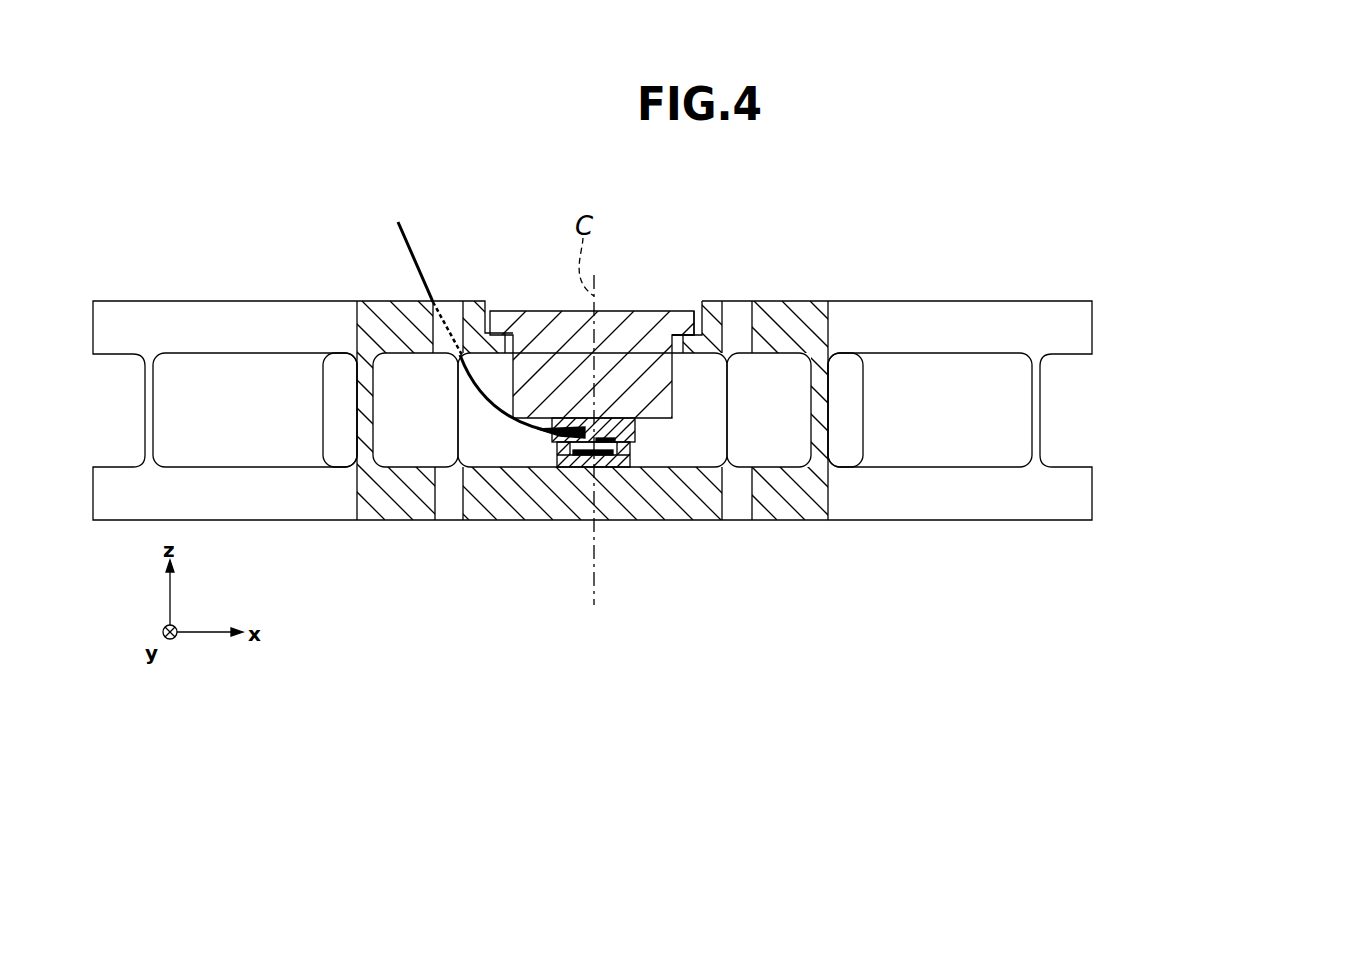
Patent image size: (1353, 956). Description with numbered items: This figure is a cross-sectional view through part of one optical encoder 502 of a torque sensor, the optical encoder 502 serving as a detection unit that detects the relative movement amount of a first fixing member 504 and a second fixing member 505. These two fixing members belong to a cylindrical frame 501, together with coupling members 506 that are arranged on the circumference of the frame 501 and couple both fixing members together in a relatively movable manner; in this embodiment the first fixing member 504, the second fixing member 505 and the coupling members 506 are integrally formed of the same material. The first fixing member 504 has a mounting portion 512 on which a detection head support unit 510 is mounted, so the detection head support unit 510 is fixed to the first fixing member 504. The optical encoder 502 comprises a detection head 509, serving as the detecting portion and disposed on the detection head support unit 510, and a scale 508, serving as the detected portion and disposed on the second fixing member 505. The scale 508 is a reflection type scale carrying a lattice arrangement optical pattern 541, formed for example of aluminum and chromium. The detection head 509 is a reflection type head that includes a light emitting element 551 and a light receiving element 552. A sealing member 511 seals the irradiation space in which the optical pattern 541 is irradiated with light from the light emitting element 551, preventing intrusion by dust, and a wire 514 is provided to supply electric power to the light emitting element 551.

The frame 501 is at (704, 410).
The first fixing member 504 is at (1108, 318).
The second fixing member 505 is at (1108, 497).
The coupling member 506 is at (1066, 420).
The optical encoder 502 is at (620, 289).
The detection head support unit 510 is at (538, 323).
The mounting portion 512 is at (691, 303).
The wire 514 is at (404, 235).
The light emitting element 551 is at (552, 424).
The light receiving element 552 is at (625, 425).
The detection head 509 is at (622, 424).
The scale 508 is at (577, 468).
The sealing member 511 is at (561, 468).
The optical pattern 541 is at (600, 457).